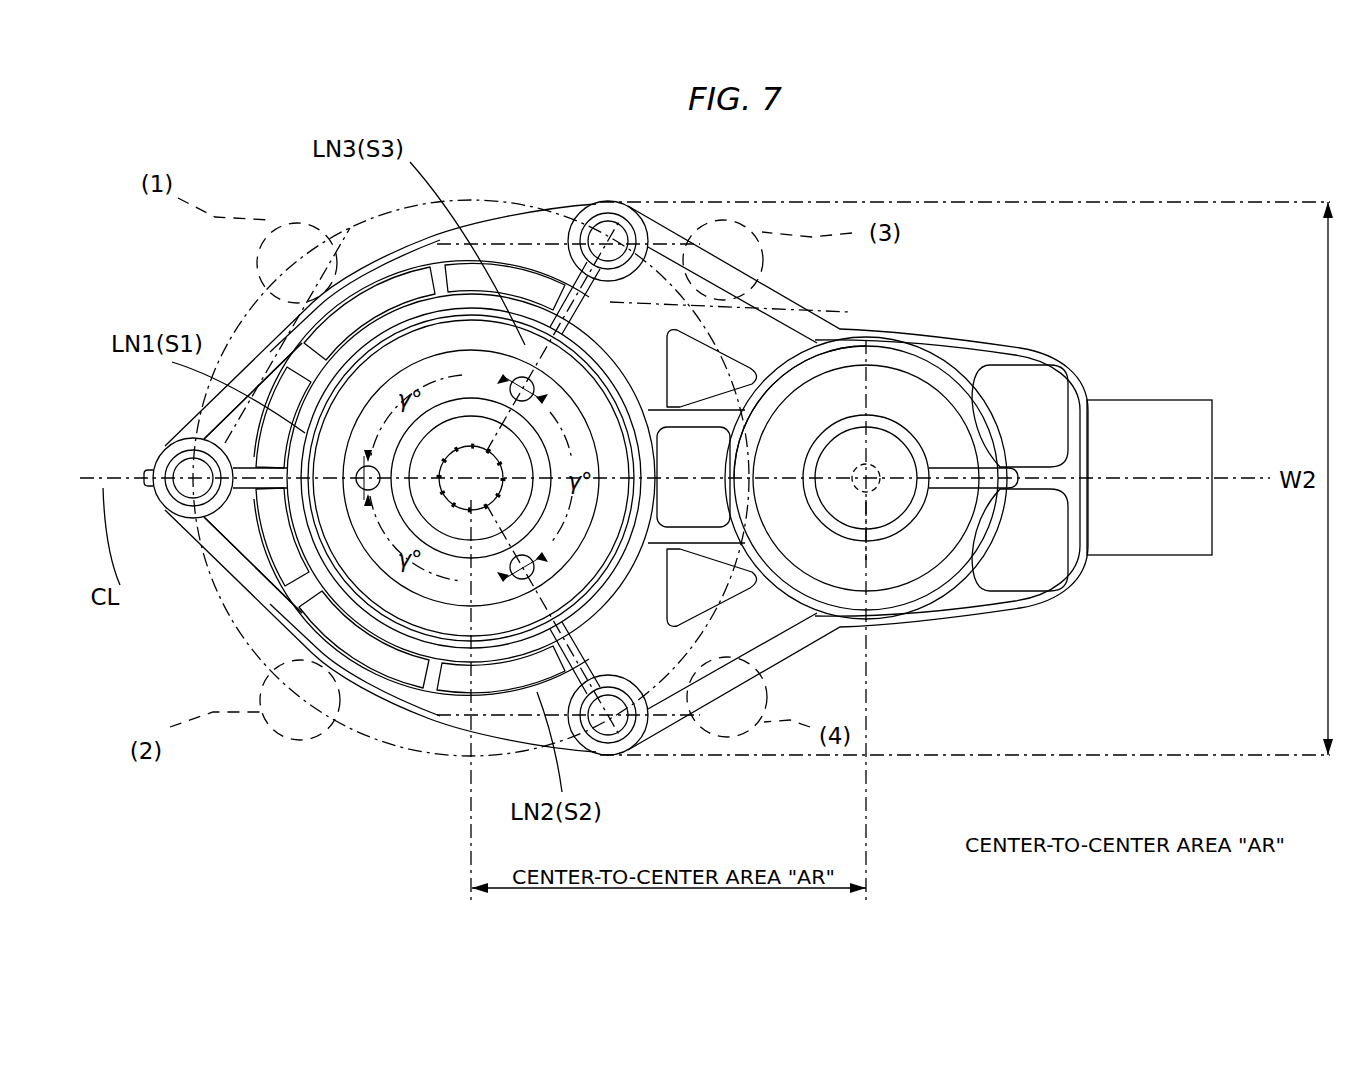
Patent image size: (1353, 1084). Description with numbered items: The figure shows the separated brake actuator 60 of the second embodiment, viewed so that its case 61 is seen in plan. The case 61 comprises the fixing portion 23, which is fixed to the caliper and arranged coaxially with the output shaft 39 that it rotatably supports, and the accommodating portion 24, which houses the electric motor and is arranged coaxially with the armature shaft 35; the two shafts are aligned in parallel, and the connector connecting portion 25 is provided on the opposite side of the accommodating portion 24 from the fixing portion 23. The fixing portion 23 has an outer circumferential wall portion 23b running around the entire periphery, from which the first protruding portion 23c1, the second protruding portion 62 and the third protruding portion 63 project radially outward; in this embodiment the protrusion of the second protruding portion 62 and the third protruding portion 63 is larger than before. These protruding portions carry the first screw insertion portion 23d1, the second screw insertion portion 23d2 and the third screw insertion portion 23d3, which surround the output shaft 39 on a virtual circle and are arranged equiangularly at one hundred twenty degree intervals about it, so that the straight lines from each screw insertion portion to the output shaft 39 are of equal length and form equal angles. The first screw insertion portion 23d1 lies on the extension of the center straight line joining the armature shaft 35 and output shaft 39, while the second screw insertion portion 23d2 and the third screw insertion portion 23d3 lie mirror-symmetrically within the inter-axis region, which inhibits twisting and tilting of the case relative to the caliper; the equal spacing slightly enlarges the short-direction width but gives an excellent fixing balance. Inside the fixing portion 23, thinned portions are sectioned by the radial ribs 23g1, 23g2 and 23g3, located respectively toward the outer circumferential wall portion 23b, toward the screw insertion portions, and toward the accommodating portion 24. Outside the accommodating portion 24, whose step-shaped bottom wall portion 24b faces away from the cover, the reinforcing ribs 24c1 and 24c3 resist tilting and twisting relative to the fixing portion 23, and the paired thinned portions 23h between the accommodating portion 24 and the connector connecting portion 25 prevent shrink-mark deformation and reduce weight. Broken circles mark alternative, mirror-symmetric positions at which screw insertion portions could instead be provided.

The fixing portion 23 is at (350, 254).
The output shaft 39 is at (456, 491).
The first screw insertion portion 23d1 is at (174, 466).
The second screw insertion portion 23d2 is at (606, 727).
The third screw insertion portion 23d3 is at (604, 232).
The first protruding portion 23c1 is at (240, 525).
The third protruding portion 63 is at (540, 247).
The second protruding portion 62 is at (661, 698).
The radial rib 23g1 is at (432, 683).
The radial rib 23g2 is at (252, 548).
The radial rib 23g3 is at (760, 397).
The outer circumferential wall portion 23b is at (688, 407).
The accommodating portion 24 is at (1012, 432).
The reinforcing rib 24c3 is at (745, 348).
The bottom wall portion 24b is at (902, 560).
The reinforcing rib 24c1 is at (962, 490).
The armature shaft 35 is at (1050, 392).
The case 61 is at (1046, 612).
The thinned portion 23h is at (1047, 447).
The connector connecting portion 25 is at (1178, 456).
The actuator 60 is at (322, 791).